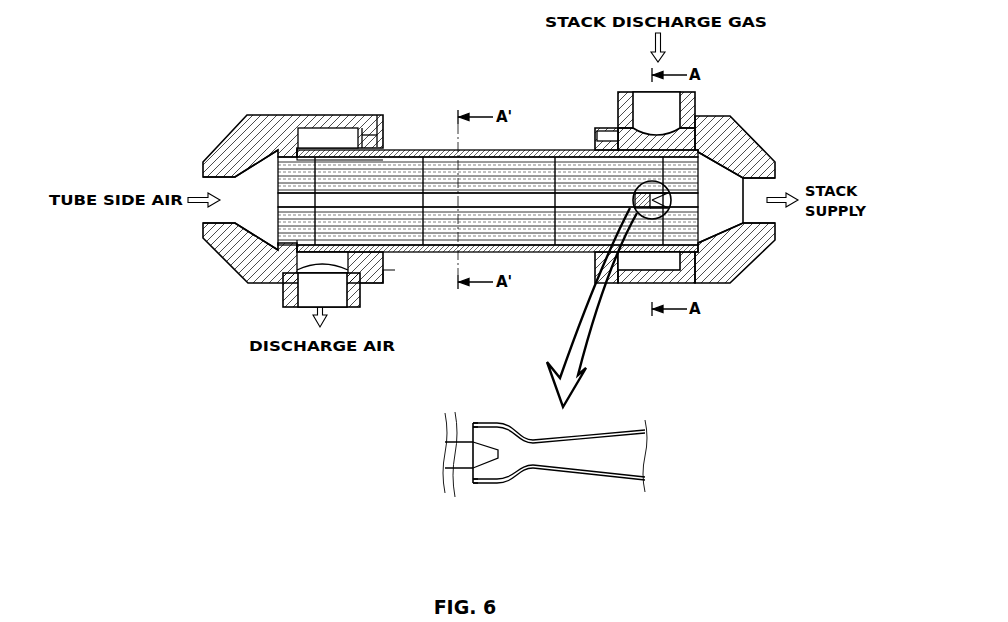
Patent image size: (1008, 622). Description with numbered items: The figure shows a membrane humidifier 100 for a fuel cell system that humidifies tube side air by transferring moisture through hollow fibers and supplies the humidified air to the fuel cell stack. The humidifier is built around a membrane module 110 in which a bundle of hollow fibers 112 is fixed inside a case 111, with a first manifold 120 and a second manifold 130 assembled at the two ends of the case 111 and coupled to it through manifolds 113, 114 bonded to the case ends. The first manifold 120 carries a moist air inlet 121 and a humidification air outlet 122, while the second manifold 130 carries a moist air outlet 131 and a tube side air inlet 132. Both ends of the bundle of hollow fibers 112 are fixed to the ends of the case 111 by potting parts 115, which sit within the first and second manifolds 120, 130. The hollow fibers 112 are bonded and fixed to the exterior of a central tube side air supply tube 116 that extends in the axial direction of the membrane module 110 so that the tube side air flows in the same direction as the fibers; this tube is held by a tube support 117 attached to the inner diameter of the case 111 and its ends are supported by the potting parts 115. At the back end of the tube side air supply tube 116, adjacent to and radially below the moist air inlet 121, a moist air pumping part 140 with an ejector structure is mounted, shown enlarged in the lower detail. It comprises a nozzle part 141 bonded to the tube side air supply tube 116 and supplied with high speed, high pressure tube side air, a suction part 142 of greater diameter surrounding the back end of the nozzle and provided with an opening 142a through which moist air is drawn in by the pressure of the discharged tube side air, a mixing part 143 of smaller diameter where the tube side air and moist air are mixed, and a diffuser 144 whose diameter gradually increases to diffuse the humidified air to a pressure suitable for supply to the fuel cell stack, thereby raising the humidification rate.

The membrane humidifier 100 is at (296, 86).
The membrane module 110 is at (551, 140).
The case 111 is at (437, 148).
The hollow fibers 112 is at (447, 233).
The manifold 113 is at (612, 142).
The manifold 114 is at (376, 137).
The potting parts 115 is at (262, 242).
The tube side air supply tube 116 is at (542, 200).
The tube support 117 is at (421, 240).
The first manifold 120 is at (747, 156).
The moist air inlet 121 is at (697, 105).
The humidification air outlet 122 is at (770, 212).
The second manifold 130 is at (230, 138).
The moist air outlet 131 is at (290, 292).
The tube side air inlet 132 is at (203, 222).
The moist air pumping part 140 is at (647, 214).
The nozzle part 141 is at (465, 432).
The suction part 142 is at (490, 484).
The opening 142a is at (473, 485).
The mixing part 143 is at (557, 470).
The diffuser 144 is at (623, 481).